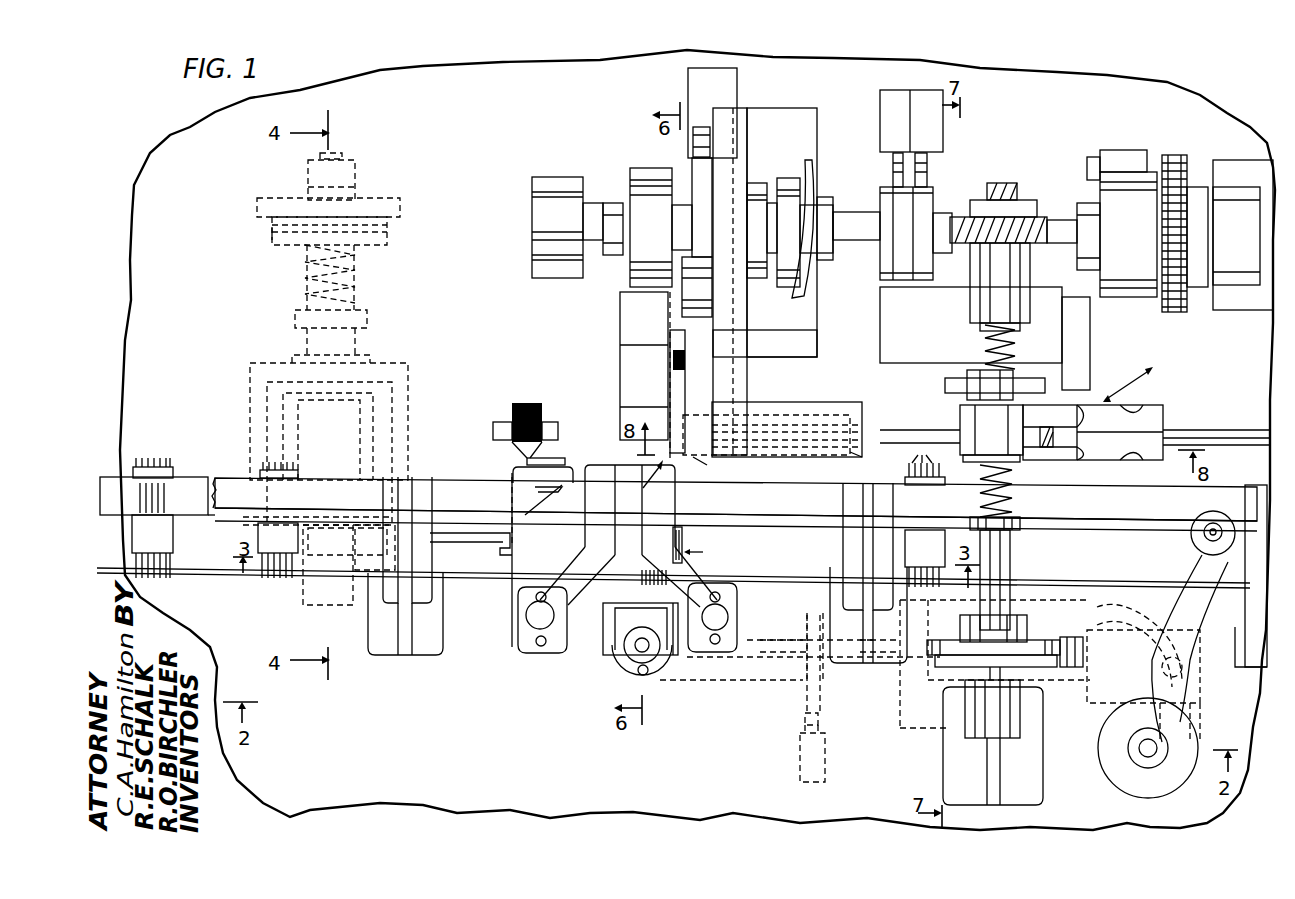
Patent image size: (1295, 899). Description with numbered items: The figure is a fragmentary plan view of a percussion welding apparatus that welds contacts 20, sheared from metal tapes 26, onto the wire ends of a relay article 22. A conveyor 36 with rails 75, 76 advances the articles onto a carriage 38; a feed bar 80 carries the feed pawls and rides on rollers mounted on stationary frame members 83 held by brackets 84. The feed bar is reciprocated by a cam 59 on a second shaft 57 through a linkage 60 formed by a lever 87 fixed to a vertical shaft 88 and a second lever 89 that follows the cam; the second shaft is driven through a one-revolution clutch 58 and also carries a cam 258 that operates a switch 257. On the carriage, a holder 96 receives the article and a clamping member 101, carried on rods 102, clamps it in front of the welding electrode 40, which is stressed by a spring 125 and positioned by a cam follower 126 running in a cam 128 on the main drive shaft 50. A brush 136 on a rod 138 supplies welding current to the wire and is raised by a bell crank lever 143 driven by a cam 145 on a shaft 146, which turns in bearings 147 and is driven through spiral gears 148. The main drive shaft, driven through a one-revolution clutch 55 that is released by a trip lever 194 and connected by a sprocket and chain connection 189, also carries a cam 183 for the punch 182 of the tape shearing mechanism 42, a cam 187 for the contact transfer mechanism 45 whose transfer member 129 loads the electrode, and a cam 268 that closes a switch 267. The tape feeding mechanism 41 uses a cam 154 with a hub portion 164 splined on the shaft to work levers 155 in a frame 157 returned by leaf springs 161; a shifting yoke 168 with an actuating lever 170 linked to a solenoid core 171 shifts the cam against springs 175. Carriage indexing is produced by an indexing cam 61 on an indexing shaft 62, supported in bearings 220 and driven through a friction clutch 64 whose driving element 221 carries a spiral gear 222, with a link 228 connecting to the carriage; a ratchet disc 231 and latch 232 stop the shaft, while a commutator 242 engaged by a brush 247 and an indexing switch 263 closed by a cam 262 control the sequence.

The contact 20 is at (922, 450).
The relay part or article 22 is at (153, 460).
The tape 26 is at (1212, 436).
The conveyor 36 is at (218, 548).
The carriage 38 is at (508, 588).
The welding electrode or gun 40 is at (672, 290).
The tape feeding mechanism 41 is at (1137, 380).
The tape shearing mechanism 42 is at (712, 410).
The contact transfer mechanism 45 is at (808, 460).
The main drive shaft 50 is at (1060, 222).
The one-revolution clutch 55 is at (1125, 168).
The second shaft 57 is at (783, 682).
The one-revolution clutch 58 is at (925, 702).
The cam 59 is at (1128, 603).
The linkage 60 is at (1205, 620).
The indexing cam 61 is at (280, 520).
The indexing shaft 62 is at (335, 150).
The friction clutch 64 is at (268, 235).
The rail 75 is at (185, 485).
The rail 76 is at (205, 572).
The feed bar 80 is at (222, 486).
The stationary frame member 83 is at (445, 482).
The bracket 84 is at (388, 600).
The lever 87 is at (1195, 605).
The vertical shaft 88 is at (1140, 748).
The second lever 89 is at (1178, 710).
The holder 96 is at (703, 553).
The clamping member 101 is at (625, 466).
The rod 102 is at (552, 625).
The spring 125 is at (668, 368).
The cam follower 126 is at (662, 262).
The cam 128 is at (640, 275).
The transfer member 129 is at (712, 460).
The brush 136 is at (668, 605).
The rod 138 is at (630, 660).
The bell crank lever 143 is at (1045, 665).
The cam 145 is at (1032, 635).
The shaft 146 is at (1012, 560).
The bearing 147 is at (1008, 270).
The spiral gears 148 is at (1010, 215).
The actuating member or cam 154 is at (975, 428).
The lever 155 is at (1042, 450).
The frame 157 is at (1140, 407).
The leaf spring 161 is at (1140, 414).
The hub portion 164 is at (975, 408).
The shifting yoke 168 is at (955, 380).
The actuating lever 170 is at (958, 348).
The core 171 is at (1070, 347).
The spring 175 is at (1012, 340).
The punch 182 is at (715, 342).
The cam 183 is at (720, 190).
The cam 187 is at (800, 292).
The sprocket and chain connection 189 is at (1173, 160).
The trip lever 194 is at (1093, 165).
The bearing 220 is at (355, 165).
The driving element 221 is at (387, 222).
The spiral gear 222 is at (400, 208).
The link 228 is at (458, 535).
The ratchet disc 231 is at (315, 560).
The latch 232 is at (350, 555).
The commutator 242 is at (508, 400).
The brush 247 is at (530, 460).
The switch 257 is at (818, 720).
The cam 258 is at (820, 710).
The cam 262 is at (890, 205).
The indexing switch 263 is at (893, 148).
The switch 267 is at (943, 146).
The cam 268 is at (925, 200).